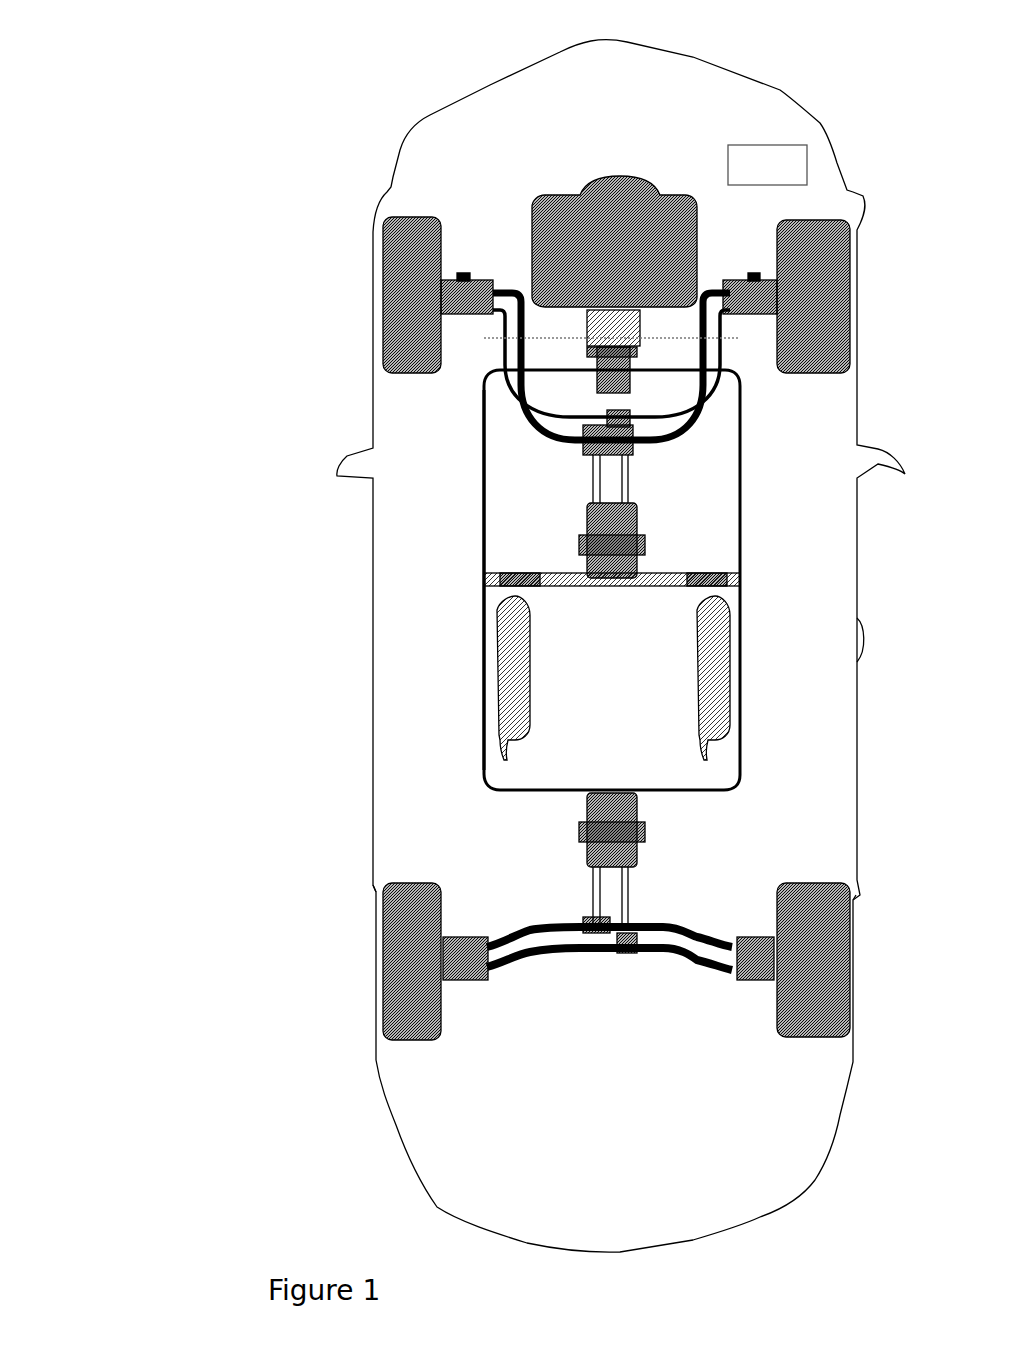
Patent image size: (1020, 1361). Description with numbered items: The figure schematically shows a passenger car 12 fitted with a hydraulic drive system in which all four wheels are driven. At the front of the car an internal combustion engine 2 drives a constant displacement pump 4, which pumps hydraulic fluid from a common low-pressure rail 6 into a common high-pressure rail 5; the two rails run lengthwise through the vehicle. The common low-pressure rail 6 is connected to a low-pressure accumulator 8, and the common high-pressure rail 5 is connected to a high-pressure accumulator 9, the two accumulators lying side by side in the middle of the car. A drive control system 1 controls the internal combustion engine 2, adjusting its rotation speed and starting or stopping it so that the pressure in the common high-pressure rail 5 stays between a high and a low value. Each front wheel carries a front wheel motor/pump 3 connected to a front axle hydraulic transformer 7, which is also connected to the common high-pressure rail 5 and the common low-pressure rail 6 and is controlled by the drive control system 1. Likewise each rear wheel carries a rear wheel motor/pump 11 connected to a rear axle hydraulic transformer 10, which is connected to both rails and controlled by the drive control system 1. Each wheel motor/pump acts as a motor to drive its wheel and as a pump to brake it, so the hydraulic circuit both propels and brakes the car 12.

The drive control system 1 is at (770, 163).
The internal combustion engine 2 is at (618, 163).
The front wheel motor/pump 3 is at (753, 277).
The constant displacement pump 4 is at (580, 392).
The common high-pressure rail 5 is at (727, 478).
The common low-pressure rail 6 is at (488, 518).
The front axle hydraulic transformer 7 is at (567, 547).
The low-pressure accumulator 8 is at (495, 645).
The high-pressure accumulator 9 is at (690, 692).
The rear axle hydraulic transformer 10 is at (567, 825).
The rear wheel motor/pump 11 is at (755, 1000).
The passenger car 12 is at (520, 1198).